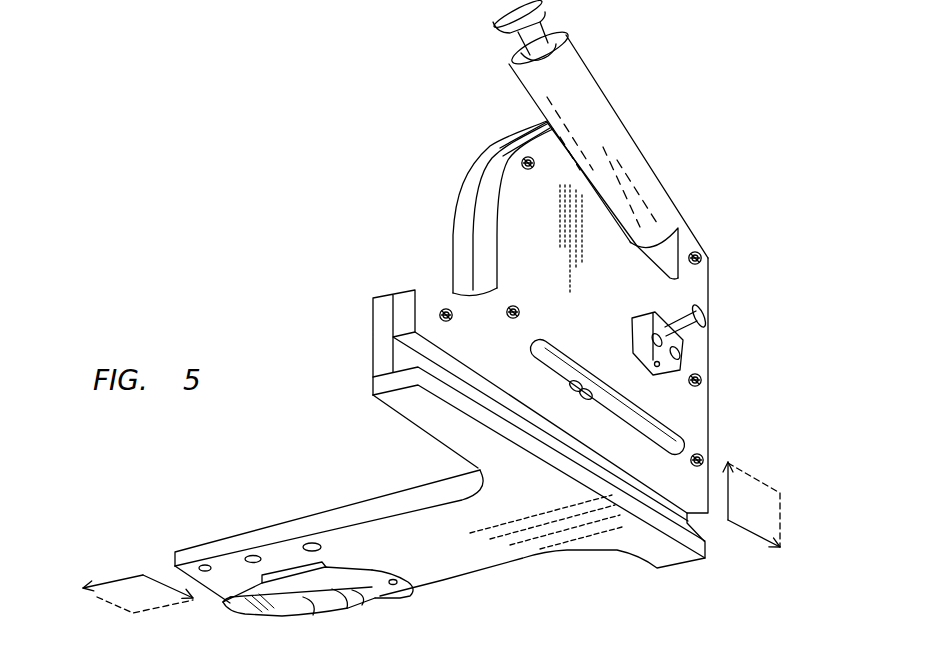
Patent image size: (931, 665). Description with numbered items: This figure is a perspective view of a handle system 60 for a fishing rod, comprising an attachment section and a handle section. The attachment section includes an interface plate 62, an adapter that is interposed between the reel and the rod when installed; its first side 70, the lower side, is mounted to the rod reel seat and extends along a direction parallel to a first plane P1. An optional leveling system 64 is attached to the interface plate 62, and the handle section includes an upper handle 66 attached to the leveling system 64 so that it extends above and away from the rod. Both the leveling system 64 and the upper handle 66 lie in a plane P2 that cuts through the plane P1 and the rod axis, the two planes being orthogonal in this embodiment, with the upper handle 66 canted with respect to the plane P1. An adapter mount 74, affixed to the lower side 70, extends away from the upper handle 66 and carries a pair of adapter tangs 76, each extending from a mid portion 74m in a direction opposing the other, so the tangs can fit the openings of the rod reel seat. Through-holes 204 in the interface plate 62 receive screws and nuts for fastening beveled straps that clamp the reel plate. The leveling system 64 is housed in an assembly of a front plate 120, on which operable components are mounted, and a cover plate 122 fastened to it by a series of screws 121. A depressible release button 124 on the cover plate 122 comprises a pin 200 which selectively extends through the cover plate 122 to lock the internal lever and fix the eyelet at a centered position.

The handle system 60 is at (367, 140).
The interface plate 62 is at (303, 520).
The leveling system 64 is at (617, 302).
The upper handle 66 is at (603, 80).
The first side 70 is at (424, 549).
The adapter mount 74 is at (333, 597).
The mid portion 74m is at (312, 603).
The adapter tangs 76 is at (240, 609).
The front plate 120 is at (455, 210).
The screws 121 is at (522, 160).
The cover plate 122 is at (657, 393).
The release button 124 is at (704, 314).
The pin 200 is at (684, 340).
The through-holes 204 is at (204, 565).
The first plane P1 is at (135, 593).
The plane P2 is at (750, 505).